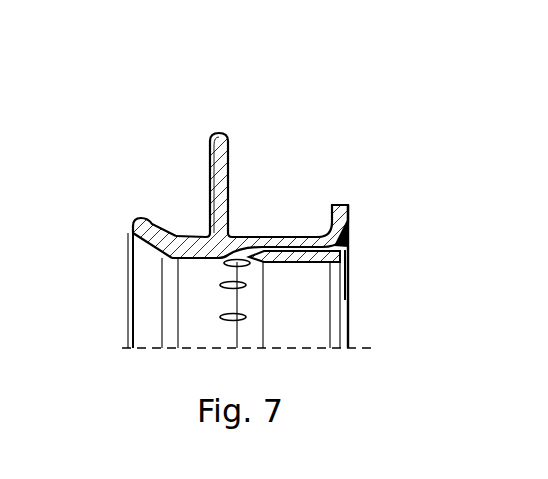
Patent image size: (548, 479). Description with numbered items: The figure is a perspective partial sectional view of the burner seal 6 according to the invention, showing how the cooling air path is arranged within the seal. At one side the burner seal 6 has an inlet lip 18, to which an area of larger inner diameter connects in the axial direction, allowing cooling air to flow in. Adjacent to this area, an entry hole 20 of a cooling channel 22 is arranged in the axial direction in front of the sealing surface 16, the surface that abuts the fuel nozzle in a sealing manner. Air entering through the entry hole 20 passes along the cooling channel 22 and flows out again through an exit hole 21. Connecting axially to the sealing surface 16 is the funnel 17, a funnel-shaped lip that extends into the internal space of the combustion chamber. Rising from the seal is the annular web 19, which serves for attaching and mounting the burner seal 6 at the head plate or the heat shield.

The burner seal 6 is at (120, 183).
The sealing surface 16 is at (315, 267).
The funnel 17 is at (343, 207).
The inlet lip 18 is at (132, 226).
The annular web 19 is at (218, 163).
The entry hole 20 is at (222, 318).
The exit hole 21 is at (350, 227).
The cooling channel 22 is at (290, 252).